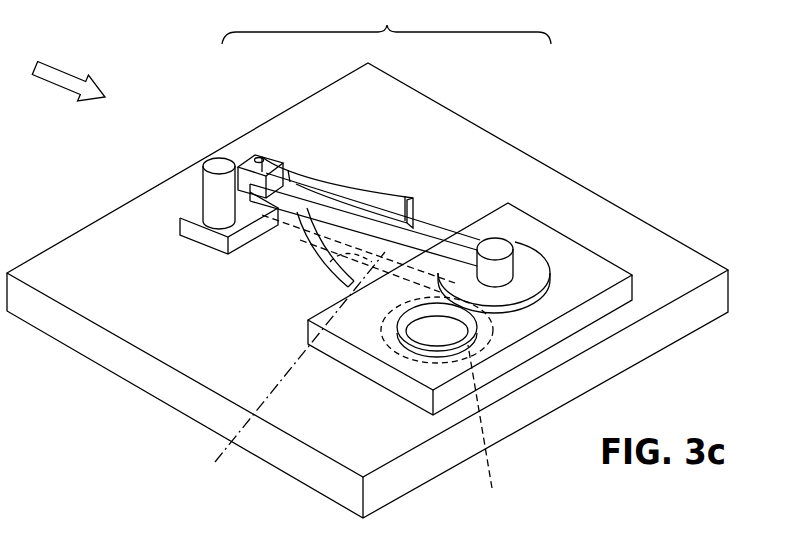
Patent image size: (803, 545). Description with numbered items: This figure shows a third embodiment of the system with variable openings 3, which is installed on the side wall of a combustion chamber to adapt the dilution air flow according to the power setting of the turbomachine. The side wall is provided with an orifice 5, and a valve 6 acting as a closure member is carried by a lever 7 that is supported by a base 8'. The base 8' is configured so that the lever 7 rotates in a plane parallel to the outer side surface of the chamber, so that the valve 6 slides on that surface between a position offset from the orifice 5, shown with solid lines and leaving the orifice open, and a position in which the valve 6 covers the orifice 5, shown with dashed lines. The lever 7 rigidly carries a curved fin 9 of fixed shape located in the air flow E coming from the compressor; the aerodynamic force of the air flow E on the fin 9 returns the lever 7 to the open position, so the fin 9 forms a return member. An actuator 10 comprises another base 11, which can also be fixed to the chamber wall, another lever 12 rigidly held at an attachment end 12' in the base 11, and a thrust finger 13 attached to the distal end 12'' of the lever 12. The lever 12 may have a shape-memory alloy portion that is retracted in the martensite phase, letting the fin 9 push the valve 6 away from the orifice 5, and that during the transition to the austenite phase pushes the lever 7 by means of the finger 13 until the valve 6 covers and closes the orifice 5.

The system with variable openings 3 is at (586, 99).
The orifice 5 is at (470, 348).
The valve 6 is at (533, 252).
The lever 7 is at (447, 233).
The base 8' is at (209, 191).
The curved fin 9 is at (328, 250).
The actuator 10 is at (386, 23).
The base 11 is at (258, 156).
The lever 12 is at (351, 132).
The attachment end 12' is at (277, 123).
The distal end 12'' is at (454, 144).
The thrust finger 13 is at (425, 238).
The air flow E is at (74, 60).